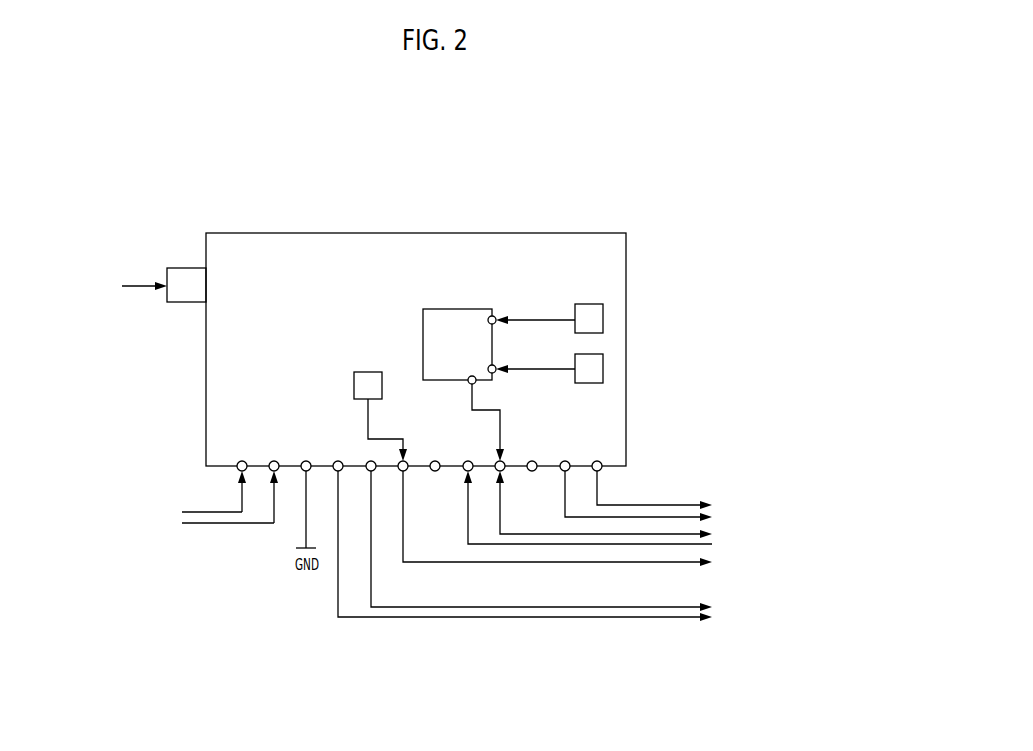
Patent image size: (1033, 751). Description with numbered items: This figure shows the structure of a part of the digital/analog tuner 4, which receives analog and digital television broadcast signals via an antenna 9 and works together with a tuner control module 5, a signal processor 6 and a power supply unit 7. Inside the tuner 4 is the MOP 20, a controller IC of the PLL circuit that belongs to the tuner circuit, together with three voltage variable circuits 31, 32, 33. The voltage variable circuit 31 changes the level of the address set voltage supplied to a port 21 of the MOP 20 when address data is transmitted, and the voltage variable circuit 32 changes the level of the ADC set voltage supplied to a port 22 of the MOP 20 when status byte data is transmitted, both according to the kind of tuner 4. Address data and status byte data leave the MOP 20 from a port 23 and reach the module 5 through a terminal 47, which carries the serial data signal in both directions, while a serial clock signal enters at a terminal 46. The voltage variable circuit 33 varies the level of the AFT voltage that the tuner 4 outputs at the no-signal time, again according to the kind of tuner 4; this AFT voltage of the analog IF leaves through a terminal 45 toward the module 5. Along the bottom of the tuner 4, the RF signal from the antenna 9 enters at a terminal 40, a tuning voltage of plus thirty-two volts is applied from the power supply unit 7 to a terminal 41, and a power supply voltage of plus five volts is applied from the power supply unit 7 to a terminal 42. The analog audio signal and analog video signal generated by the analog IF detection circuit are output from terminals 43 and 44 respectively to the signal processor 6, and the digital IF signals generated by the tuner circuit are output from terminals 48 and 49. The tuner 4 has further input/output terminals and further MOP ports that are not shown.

The tuner 4 is at (438, 212).
The tuner control module 5 is at (768, 541).
The signal processor 6 is at (803, 607).
The power supply unit 7 is at (140, 520).
The antenna 9 is at (104, 287).
The MOP 20 is at (452, 309).
The port 21 is at (494, 325).
The port 22 is at (494, 373).
The port 23 is at (470, 384).
The voltage variable circuit 31 is at (586, 305).
The voltage variable circuit 32 is at (592, 384).
The voltage variable circuit 33 is at (372, 372).
The terminal 40 is at (186, 268).
The terminal 41 is at (239, 472).
The terminal 42 is at (271, 472).
The terminal 43 is at (335, 472).
The terminal 44 is at (368, 472).
The terminal 45 is at (400, 472).
The terminal 46 is at (465, 472).
The terminal 47 is at (497, 472).
The terminal 48 is at (562, 472).
The terminal 49 is at (594, 472).